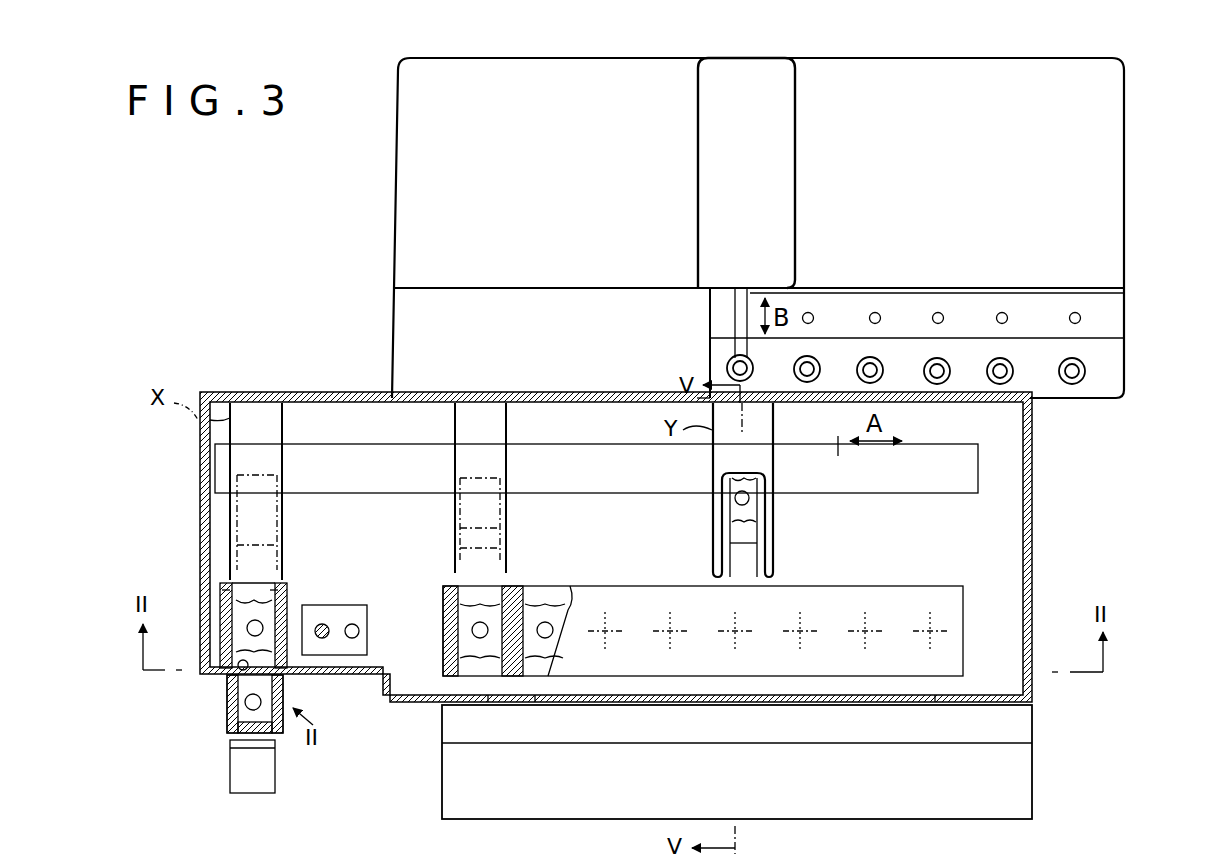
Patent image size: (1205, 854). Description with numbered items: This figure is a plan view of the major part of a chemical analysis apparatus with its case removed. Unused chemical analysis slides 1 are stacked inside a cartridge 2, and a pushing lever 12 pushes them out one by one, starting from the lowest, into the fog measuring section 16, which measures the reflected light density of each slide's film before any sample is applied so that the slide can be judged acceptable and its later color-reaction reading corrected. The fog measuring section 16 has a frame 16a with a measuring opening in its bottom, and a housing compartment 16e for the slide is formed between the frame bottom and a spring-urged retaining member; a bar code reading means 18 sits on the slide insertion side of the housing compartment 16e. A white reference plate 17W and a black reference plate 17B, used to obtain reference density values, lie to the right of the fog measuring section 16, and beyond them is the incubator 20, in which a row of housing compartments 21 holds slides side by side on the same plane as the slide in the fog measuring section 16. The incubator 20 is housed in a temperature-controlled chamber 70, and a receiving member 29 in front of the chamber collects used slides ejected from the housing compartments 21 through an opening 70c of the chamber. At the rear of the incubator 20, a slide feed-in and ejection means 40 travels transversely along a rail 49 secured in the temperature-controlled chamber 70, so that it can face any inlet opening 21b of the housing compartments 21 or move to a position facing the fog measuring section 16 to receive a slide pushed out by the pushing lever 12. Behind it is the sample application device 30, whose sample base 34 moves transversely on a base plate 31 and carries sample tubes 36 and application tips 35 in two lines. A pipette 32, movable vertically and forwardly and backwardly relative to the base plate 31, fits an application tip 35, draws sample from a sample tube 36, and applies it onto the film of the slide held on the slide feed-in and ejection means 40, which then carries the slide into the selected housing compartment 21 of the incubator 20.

The chemical analysis slide 1 is at (220, 692).
The cartridge 2 is at (226, 705).
The pushing lever 12 is at (262, 762).
The fog measuring section 16 is at (216, 556).
The frame 16a is at (228, 590).
The housing compartment 16e is at (262, 590).
The black reference plate 17B is at (322, 640).
The white reference plate 17W is at (352, 640).
The bar code reading means 18 is at (234, 657).
The incubator 20 is at (845, 586).
The housing compartment 21 is at (540, 665).
The inlet opening 21b is at (488, 583).
The receiving member 29 is at (1035, 778).
The sample application device 30 is at (1142, 214).
The base plate 31 is at (978, 83).
The pipette 32 is at (720, 314).
The sample base 34 is at (1108, 318).
The application tip 35 is at (811, 313).
The sample tube 36 is at (727, 370).
The slide feed-in and ejection means 40 is at (752, 438).
The rail 49 is at (643, 480).
The temperature-controlled chamber 70 is at (1032, 547).
The opening 70c is at (488, 702).